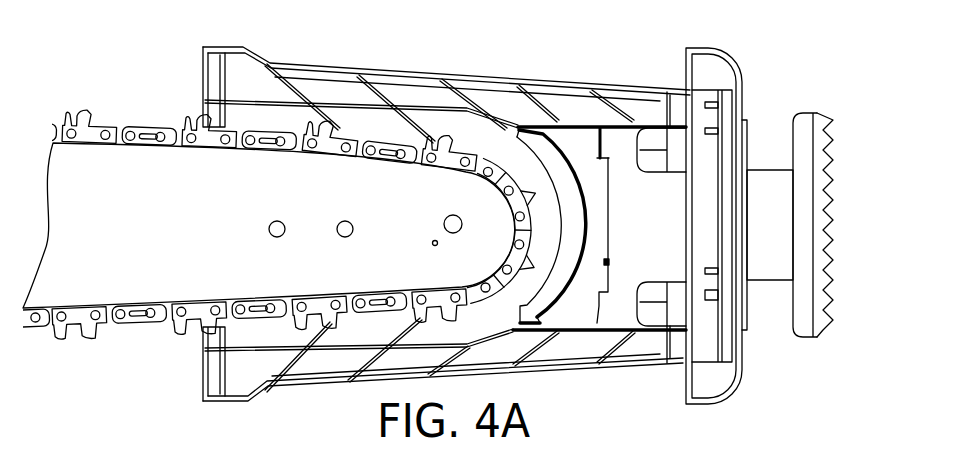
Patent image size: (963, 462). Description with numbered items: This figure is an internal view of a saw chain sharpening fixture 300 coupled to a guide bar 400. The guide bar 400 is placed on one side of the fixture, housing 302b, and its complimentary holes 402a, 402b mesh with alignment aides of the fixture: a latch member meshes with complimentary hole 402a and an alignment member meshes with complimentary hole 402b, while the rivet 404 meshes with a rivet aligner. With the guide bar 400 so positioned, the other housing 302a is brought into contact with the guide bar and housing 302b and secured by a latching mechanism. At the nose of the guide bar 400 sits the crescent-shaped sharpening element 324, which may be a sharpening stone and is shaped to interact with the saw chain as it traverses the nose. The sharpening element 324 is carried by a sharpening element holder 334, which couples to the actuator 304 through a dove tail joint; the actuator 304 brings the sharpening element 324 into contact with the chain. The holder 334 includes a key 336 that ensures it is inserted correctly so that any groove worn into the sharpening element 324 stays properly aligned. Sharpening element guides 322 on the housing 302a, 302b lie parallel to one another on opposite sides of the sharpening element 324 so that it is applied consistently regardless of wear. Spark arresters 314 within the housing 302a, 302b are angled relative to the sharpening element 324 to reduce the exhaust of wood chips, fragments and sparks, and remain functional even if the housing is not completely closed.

The saw chain sharpening fixture 300 is at (763, 63).
The housing 302a is at (530, 248).
The housing 302b is at (417, 70).
The actuator 304 is at (770, 193).
The spark arrester 314 is at (295, 360).
The sharpening element guide 322 is at (613, 110).
The sharpening element 324 is at (533, 147).
The sharpening element holder 334 is at (572, 133).
The key 336 is at (609, 262).
The guide bar 400 is at (107, 172).
The complimentary hole 402a is at (277, 220).
The complimentary hole 402b is at (338, 236).
The rivet 404 is at (447, 218).